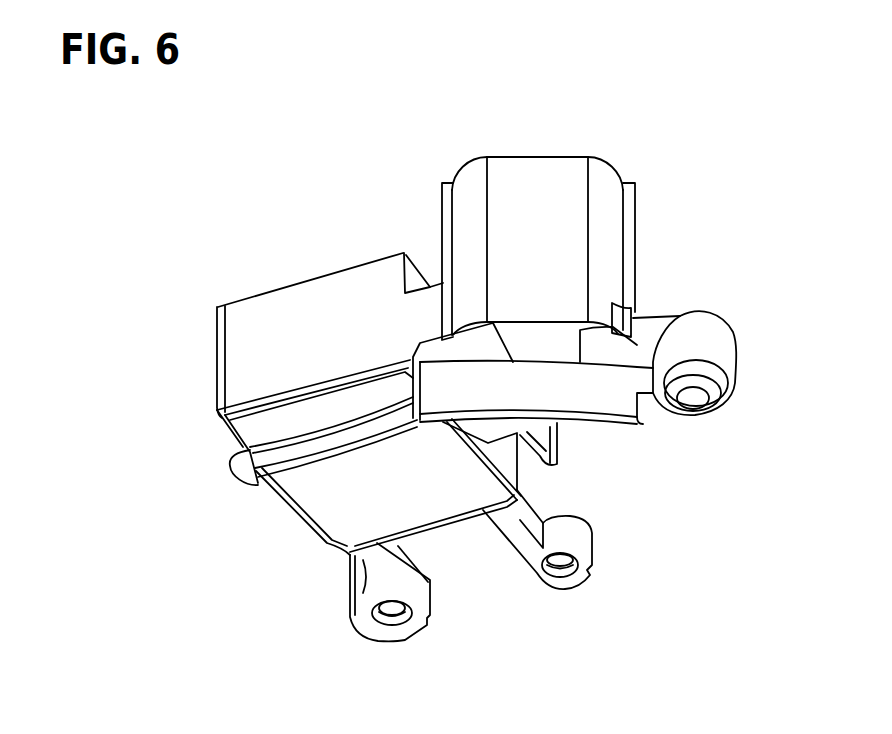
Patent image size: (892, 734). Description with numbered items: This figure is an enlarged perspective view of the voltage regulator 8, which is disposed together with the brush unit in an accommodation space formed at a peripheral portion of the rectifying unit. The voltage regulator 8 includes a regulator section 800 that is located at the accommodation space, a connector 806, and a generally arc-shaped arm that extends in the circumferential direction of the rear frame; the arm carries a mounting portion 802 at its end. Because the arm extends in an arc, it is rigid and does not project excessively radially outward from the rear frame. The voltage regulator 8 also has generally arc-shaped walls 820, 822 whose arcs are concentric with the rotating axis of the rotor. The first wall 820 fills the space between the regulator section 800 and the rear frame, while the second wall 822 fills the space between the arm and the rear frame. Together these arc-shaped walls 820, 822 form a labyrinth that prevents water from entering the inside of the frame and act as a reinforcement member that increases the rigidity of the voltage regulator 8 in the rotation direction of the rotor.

The voltage regulator 8 is at (423, 128).
The regulator section 800 is at (293, 313).
The connector 806 is at (565, 175).
The mounting portion 802 is at (713, 342).
The second wall 822 is at (600, 425).
The first wall 820 is at (303, 455).